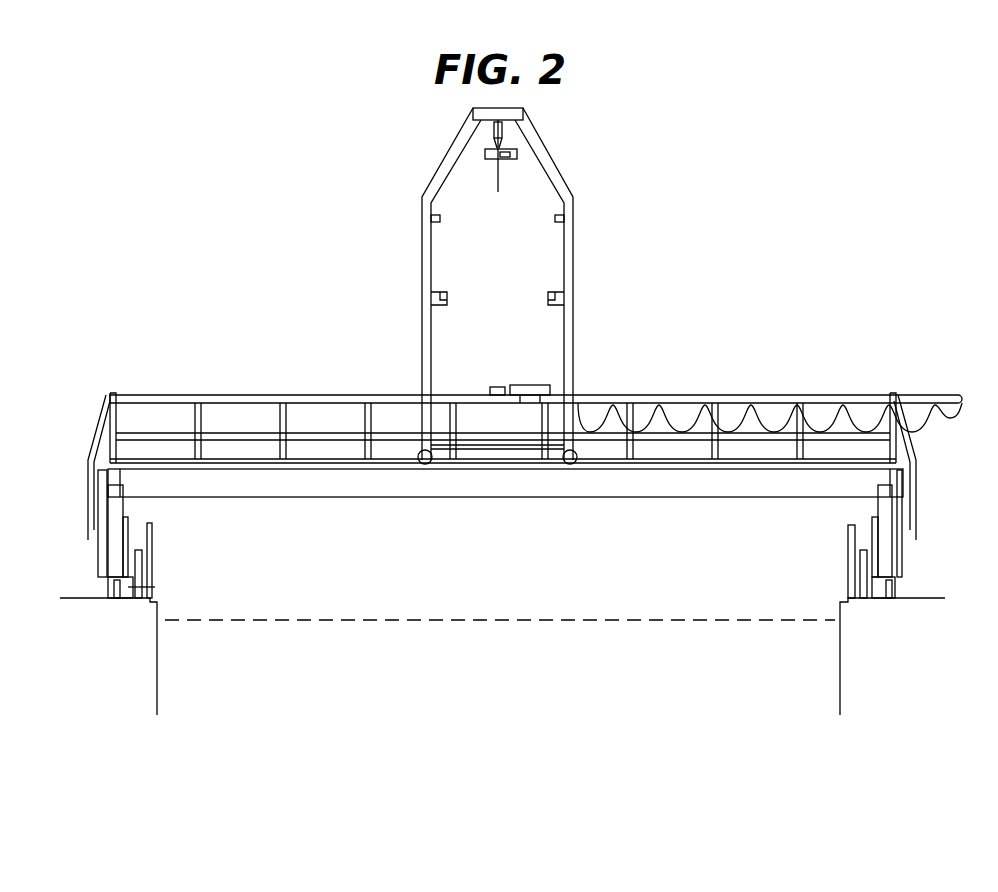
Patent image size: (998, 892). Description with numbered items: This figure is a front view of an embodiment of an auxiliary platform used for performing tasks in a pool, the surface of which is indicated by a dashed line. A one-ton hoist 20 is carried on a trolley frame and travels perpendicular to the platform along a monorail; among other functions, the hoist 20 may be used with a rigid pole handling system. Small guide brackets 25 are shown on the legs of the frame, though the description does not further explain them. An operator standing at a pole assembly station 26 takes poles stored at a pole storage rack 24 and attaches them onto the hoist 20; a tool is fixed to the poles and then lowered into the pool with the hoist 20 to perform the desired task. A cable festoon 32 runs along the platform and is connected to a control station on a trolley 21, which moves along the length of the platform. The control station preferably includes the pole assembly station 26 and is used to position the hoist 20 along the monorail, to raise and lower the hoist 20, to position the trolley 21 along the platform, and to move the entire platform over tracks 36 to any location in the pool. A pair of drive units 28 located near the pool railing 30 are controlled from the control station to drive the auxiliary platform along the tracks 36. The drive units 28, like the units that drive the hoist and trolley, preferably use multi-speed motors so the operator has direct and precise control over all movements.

The one-ton hoist 20 is at (518, 146).
The trolley 21 is at (421, 181).
The pole storage rack 24 is at (542, 386).
The guide bracket 25 is at (438, 295).
The pole assembly station 26 is at (489, 386).
The drive units 28 is at (153, 553).
The pool railing 30 is at (845, 547).
The cable festoon 32 is at (835, 424).
The tracks 36 is at (96, 593).